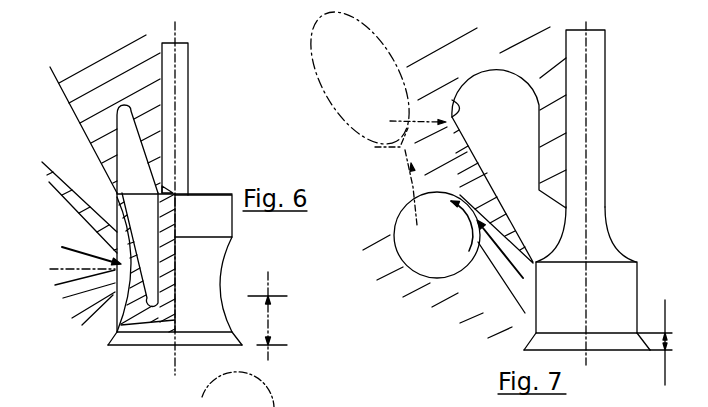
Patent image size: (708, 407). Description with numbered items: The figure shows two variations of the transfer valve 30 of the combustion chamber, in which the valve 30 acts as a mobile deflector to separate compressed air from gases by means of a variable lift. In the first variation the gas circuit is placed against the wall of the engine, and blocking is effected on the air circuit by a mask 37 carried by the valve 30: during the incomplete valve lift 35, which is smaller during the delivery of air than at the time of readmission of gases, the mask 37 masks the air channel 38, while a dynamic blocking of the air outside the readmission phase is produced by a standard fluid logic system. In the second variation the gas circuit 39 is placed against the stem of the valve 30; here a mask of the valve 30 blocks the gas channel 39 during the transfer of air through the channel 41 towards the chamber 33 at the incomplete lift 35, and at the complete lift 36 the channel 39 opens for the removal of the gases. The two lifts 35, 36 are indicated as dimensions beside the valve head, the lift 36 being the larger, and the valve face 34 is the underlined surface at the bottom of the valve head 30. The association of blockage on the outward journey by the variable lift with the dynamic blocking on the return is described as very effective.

In FIG. 6, the valve 30 is at (125, 340).
In FIG. 7, the valve 30 is at (558, 343).
In FIG. 6, the chamber 33 is at (36, 103).
In FIG. 7, the chamber 33 is at (371, 80).
In FIG. 6, the valve face 34 is at (133, 370).
In FIG. 7, the valve face 34 is at (637, 373).
In FIG. 7, the valve lift 35 is at (664, 321).
In FIG. 6, the lift 36 is at (272, 330).
In FIG. 6, the mask 37 is at (192, 210).
In FIG. 6, the air channel 38 is at (72, 143).
In FIG. 7, the gas circuit 39 is at (507, 172).
In FIG. 7, the channel 41 is at (513, 277).